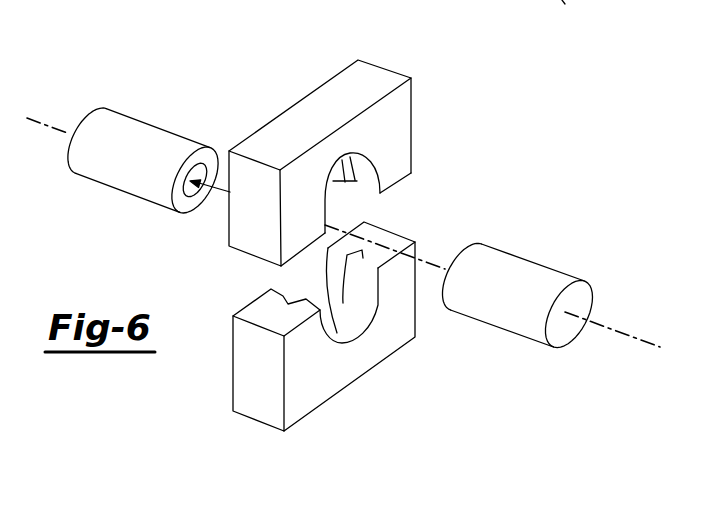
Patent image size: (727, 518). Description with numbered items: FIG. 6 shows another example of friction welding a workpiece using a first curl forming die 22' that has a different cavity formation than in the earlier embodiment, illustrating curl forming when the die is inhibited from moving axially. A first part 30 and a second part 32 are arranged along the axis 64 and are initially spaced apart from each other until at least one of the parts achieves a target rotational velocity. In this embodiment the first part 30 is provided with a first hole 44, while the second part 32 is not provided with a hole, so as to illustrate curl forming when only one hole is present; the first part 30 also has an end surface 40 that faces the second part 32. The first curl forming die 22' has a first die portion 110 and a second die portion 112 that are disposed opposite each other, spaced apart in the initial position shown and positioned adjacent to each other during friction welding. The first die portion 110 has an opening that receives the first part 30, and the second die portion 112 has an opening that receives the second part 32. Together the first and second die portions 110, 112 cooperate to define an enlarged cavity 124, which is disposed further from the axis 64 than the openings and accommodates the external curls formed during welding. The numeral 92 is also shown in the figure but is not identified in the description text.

The first part 30 is at (130, 132).
The second part 32 is at (523, 267).
The end surface 40 is at (203, 152).
The first hole 44 is at (205, 190).
The first curl forming die 22' is at (292, 62).
The first die portion 110 is at (396, 110).
The second die portion 112 is at (244, 410).
The cavity 124 is at (357, 182).
The axis 64 is at (617, 330).
The guide member 92 is at (568, 19).